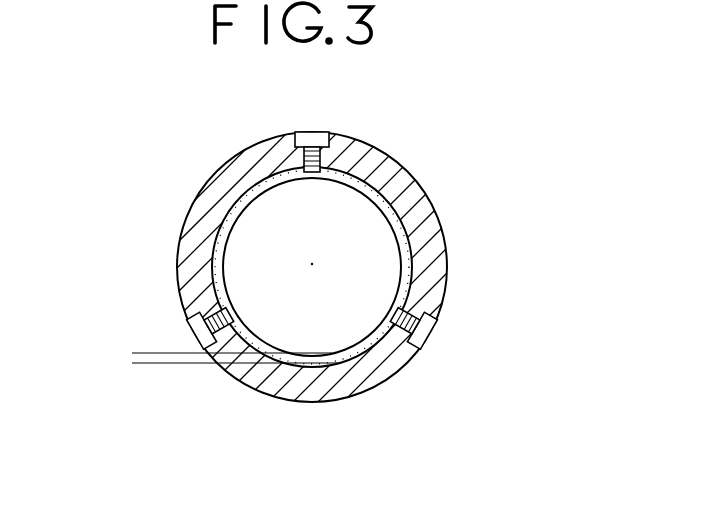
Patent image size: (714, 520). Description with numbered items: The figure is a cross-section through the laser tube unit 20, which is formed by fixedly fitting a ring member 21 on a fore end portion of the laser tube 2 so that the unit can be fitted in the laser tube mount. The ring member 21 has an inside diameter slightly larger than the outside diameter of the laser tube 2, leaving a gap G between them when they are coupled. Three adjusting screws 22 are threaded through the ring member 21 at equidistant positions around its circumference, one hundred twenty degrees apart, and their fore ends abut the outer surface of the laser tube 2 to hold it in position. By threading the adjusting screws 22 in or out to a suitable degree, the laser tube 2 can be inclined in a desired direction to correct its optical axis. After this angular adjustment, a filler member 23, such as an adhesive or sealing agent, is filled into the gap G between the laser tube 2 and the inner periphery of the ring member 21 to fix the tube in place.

The laser tube 2 is at (365, 218).
The laser tube unit 20 is at (185, 208).
The ring member 21 is at (437, 228).
The adjusting screws 22 is at (296, 132).
The filler member 23 is at (410, 265).
The gap G is at (138, 333).